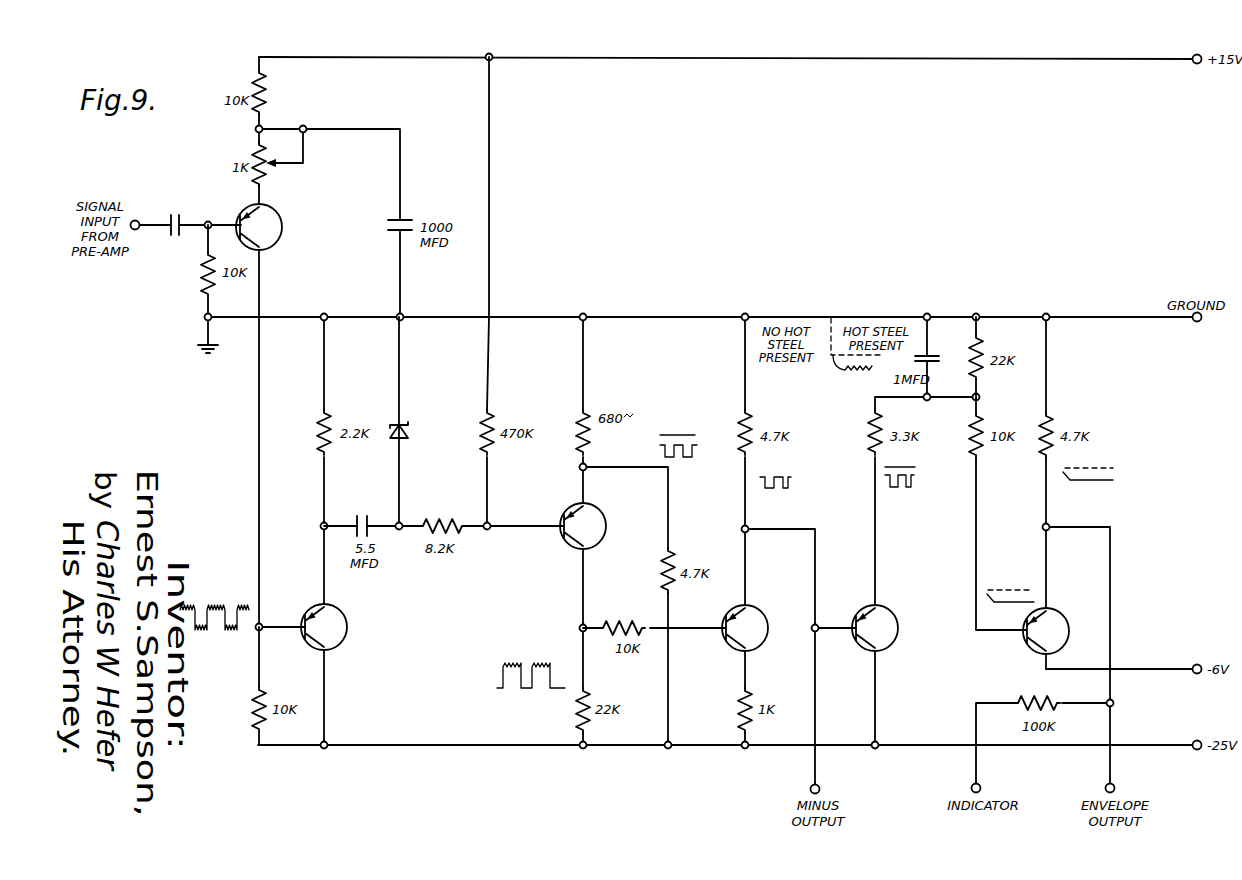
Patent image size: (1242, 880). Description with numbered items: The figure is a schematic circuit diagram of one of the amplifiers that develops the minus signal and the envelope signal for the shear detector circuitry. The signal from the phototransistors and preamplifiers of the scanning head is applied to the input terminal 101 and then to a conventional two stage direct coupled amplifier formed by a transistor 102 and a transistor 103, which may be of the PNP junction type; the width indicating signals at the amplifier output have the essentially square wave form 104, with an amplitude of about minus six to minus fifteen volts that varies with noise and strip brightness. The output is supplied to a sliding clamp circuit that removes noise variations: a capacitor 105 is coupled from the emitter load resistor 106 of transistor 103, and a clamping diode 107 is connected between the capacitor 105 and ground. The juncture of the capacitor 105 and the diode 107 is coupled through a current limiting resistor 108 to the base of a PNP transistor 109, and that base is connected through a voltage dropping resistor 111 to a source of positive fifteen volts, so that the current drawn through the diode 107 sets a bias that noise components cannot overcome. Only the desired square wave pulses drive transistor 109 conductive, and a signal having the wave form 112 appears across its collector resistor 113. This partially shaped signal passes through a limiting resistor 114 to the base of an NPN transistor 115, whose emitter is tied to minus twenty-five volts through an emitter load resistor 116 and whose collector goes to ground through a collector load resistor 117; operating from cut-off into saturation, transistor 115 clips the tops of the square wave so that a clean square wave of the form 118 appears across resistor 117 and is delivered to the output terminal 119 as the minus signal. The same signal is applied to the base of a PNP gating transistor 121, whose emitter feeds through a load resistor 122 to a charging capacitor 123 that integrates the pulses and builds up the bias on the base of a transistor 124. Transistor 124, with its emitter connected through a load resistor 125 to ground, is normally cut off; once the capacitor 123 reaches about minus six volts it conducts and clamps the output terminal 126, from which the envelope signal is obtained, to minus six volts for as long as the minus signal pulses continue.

The input terminal 101 is at (139, 221).
The transistor 102 is at (283, 223).
The transistor 103 is at (347, 623).
The wave form 104 is at (222, 604).
The capacitor 105 is at (364, 514).
The emitter load resistor 106 is at (317, 434).
The clamping diode 107 is at (406, 428).
The current limiting resistor 108 is at (440, 522).
The PNP transistor 109 is at (564, 507).
The voltage dropping resistor 111 is at (479, 424).
The wave form 112 is at (527, 664).
The collector resistor 113 is at (590, 693).
The limiting resistor 114 is at (620, 624).
The NPN transistor 115 is at (760, 606).
The emitter load resistor 116 is at (737, 710).
The collector load resistor 117 is at (737, 424).
The wave form 118 is at (793, 488).
The output terminal 119 is at (820, 786).
The gating transistor 121 is at (890, 606).
The load resistor 122 is at (867, 432).
The charging capacitor 123 is at (932, 353).
The transistor 124 is at (1070, 602).
The load resistor 125 is at (1053, 423).
The output terminal 126 is at (1115, 785).